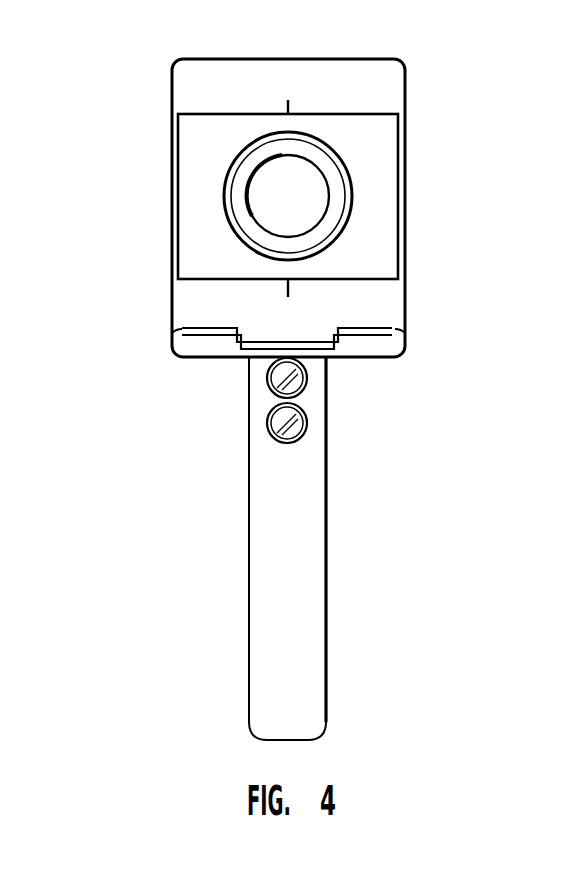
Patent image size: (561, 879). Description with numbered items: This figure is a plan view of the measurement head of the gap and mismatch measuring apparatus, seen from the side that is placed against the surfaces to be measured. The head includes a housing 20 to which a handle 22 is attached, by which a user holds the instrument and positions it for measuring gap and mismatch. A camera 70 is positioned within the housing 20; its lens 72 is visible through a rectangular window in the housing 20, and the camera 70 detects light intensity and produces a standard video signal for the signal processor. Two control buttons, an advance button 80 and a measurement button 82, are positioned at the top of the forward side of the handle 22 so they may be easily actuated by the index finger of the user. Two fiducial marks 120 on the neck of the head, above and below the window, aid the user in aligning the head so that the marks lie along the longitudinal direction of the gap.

The housing 20 is at (372, 82).
The handle 22 is at (260, 544).
The camera 70 is at (354, 234).
The lens 72 is at (313, 182).
The advance button 80 is at (298, 381).
The measurement button 82 is at (298, 424).
The fiducial marks 120 is at (287, 105).